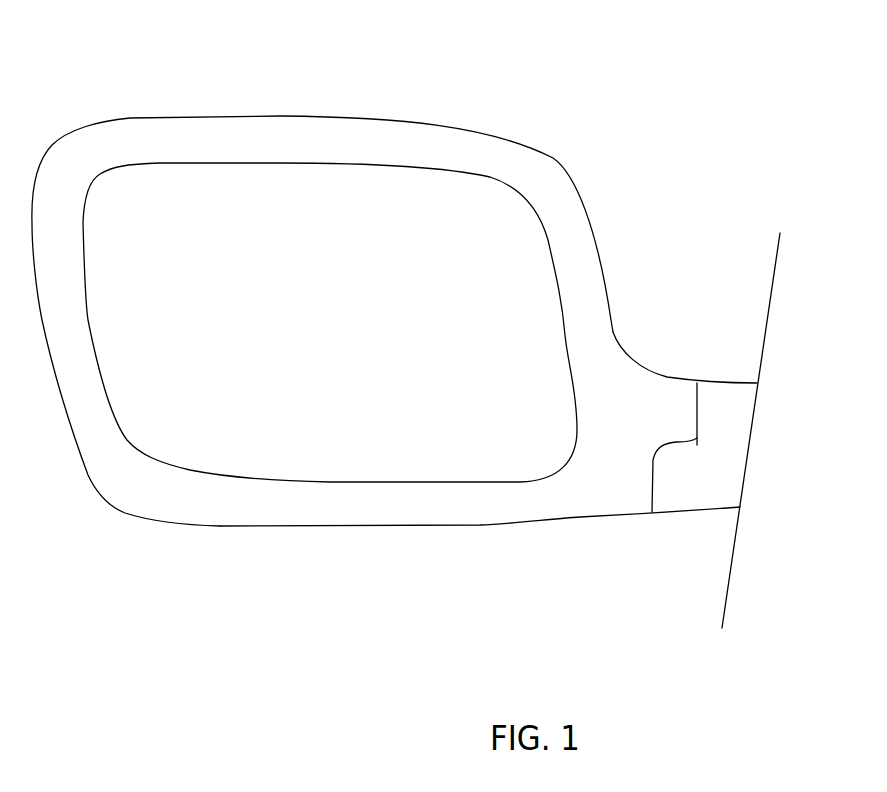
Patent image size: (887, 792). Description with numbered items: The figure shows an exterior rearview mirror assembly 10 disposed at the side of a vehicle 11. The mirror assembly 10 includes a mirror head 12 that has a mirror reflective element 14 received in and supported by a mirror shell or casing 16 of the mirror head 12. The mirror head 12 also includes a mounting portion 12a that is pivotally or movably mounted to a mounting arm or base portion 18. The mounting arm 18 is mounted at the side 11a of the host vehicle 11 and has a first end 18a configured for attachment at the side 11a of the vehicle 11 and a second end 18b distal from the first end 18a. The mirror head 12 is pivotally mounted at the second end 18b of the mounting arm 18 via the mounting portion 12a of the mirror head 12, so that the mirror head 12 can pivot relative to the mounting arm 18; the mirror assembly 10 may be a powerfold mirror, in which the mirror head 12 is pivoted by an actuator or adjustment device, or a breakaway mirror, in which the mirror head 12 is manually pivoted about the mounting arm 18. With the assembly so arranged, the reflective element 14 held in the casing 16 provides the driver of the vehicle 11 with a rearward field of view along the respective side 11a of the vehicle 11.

The exterior rearview mirror assembly 10 is at (386, 376).
The vehicle 11 is at (798, 438).
The side of the vehicle 11a is at (725, 593).
The mirror head 12 is at (308, 582).
The mounting portion 12a is at (640, 472).
The mirror reflective element 14 is at (410, 433).
The mirror shell or casing 16 is at (238, 517).
The mounting arm or base portion 18 is at (745, 390).
The first end of the mounting arm 18a is at (743, 458).
The second end of the mounting arm 18b is at (695, 433).